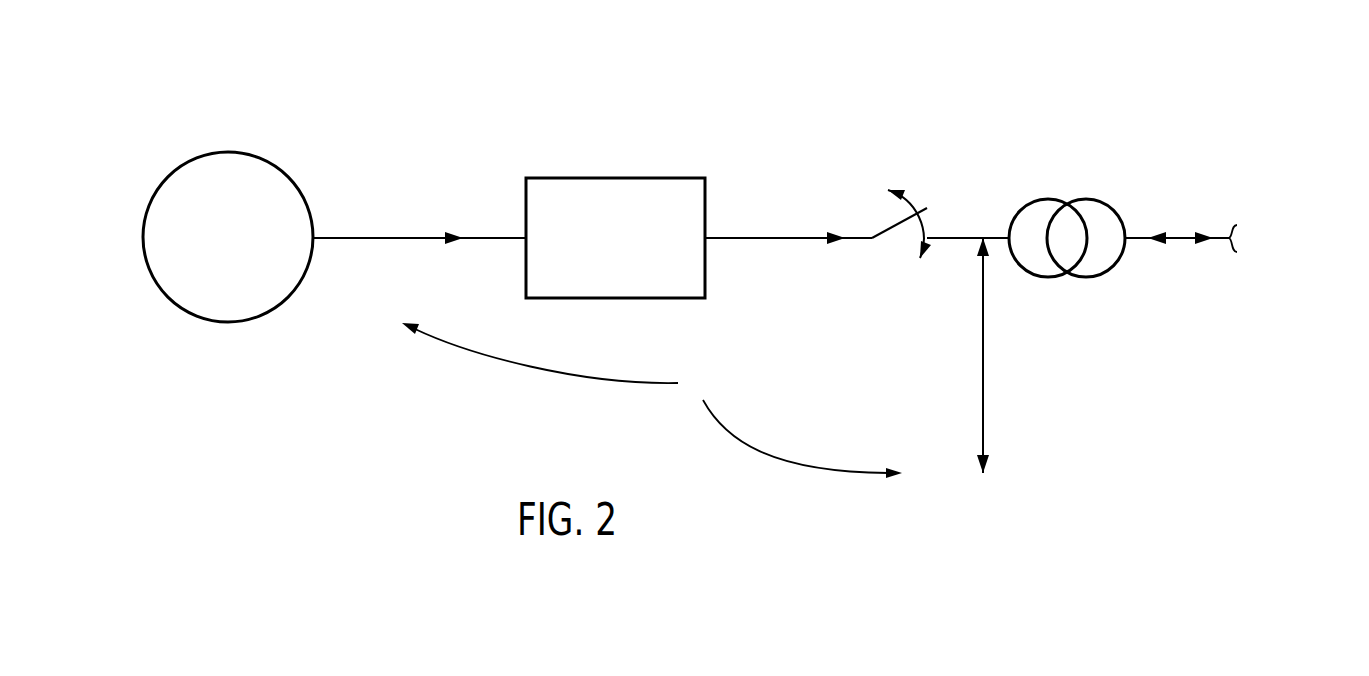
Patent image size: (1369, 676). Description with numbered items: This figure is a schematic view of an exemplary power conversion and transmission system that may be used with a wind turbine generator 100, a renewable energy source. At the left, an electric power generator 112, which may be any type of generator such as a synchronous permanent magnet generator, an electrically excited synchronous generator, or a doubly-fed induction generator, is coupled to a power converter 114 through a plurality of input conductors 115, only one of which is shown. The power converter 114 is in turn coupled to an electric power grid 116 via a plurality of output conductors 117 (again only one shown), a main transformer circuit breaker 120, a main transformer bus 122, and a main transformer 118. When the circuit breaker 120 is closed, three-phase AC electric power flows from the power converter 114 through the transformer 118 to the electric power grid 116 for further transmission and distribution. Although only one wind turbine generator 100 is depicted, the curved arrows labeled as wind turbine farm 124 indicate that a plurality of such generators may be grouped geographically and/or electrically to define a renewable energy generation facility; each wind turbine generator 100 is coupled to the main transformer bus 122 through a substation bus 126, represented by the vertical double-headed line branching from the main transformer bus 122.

The wind turbine generator 100 is at (178, 133).
The electric power generator 112 is at (268, 202).
The power converter 114 is at (601, 188).
The input conductors 115 is at (375, 238).
The electric power grid 116 is at (1288, 198).
The output conductors 117 is at (783, 238).
The main transformer 118 is at (1102, 200).
The main transformer circuit breaker 120 is at (924, 184).
The main transformer bus 122 is at (960, 238).
The wind turbine farm 124 is at (652, 400).
The substation bus 126 is at (983, 362).